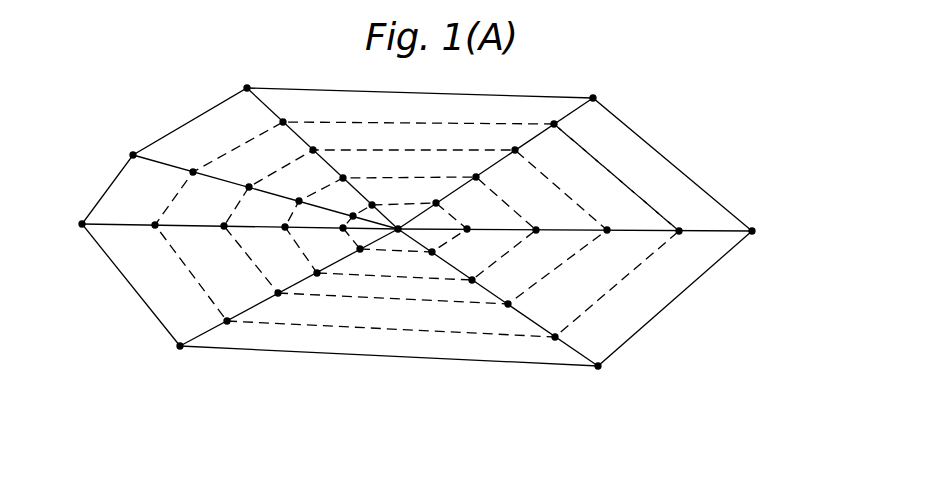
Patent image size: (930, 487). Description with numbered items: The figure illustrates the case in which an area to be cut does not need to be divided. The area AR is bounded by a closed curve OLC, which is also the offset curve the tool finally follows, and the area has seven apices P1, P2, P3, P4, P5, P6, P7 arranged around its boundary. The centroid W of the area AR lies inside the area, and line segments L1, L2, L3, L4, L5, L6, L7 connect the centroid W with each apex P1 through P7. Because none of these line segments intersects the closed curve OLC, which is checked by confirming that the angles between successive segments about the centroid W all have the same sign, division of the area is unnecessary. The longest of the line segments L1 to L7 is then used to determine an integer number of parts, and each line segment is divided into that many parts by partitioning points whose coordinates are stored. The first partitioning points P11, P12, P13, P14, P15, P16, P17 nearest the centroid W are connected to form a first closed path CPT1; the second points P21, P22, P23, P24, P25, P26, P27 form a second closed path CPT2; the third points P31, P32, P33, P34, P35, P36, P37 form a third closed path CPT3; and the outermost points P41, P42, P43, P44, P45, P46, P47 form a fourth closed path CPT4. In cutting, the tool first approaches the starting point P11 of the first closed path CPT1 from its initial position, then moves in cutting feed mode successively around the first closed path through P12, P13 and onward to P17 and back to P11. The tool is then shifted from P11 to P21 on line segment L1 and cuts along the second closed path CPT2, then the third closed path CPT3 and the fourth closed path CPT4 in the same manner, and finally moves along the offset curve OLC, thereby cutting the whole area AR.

The centroid W is at (396, 220).
The apex P1 is at (174, 358).
The apex P2 is at (604, 377).
The apex P3 is at (761, 235).
The apex P4 is at (601, 89).
The apex P5 is at (245, 78).
The apex P6 is at (124, 148).
The apex P7 is at (67, 227).
The line segment L1 is at (208, 331).
The line segment L2 is at (592, 358).
The line segment L3 is at (708, 231).
The line segment L4 is at (572, 110).
The line segment L5 is at (273, 102).
The line segment L6 is at (165, 163).
The line segment L7 is at (108, 223).
The closed curve OLC is at (646, 139).
The area AR is at (671, 182).
The first closed path CPT1 is at (465, 234).
The second closed path CPT2 is at (529, 238).
The third closed path CPT3 is at (579, 254).
The fourth closed path CPT4 is at (636, 271).
The partitioning point P11 is at (369, 259).
The partitioning point P12 is at (448, 253).
The partitioning point P13 is at (478, 220).
The partitioning point P14 is at (429, 196).
The partitioning point P15 is at (380, 196).
The partitioning point P16 is at (344, 209).
The partitioning point P17 is at (330, 220).
The partitioning point P21 is at (327, 282).
The partitioning point P22 is at (486, 278).
The partitioning point P23 is at (547, 221).
The partitioning point P24 is at (471, 169).
The partitioning point P25 is at (328, 177).
The partitioning point P26 is at (289, 193).
The partitioning point P27 is at (272, 220).
The partitioning point P31 is at (284, 305).
The partitioning point P32 is at (525, 303).
The partitioning point P33 is at (618, 220).
The partitioning point P34 is at (508, 142).
The partitioning point P35 is at (319, 139).
The partitioning point P36 is at (240, 179).
The partitioning point P37 is at (208, 219).
The partitioning point P41 is at (237, 331).
The partitioning point P42 is at (569, 335).
The partitioning point P43 is at (689, 221).
The partitioning point P44 is at (544, 115).
The partitioning point P45 is at (291, 111).
The partitioning point P46 is at (191, 164).
The partitioning point P47 is at (142, 218).